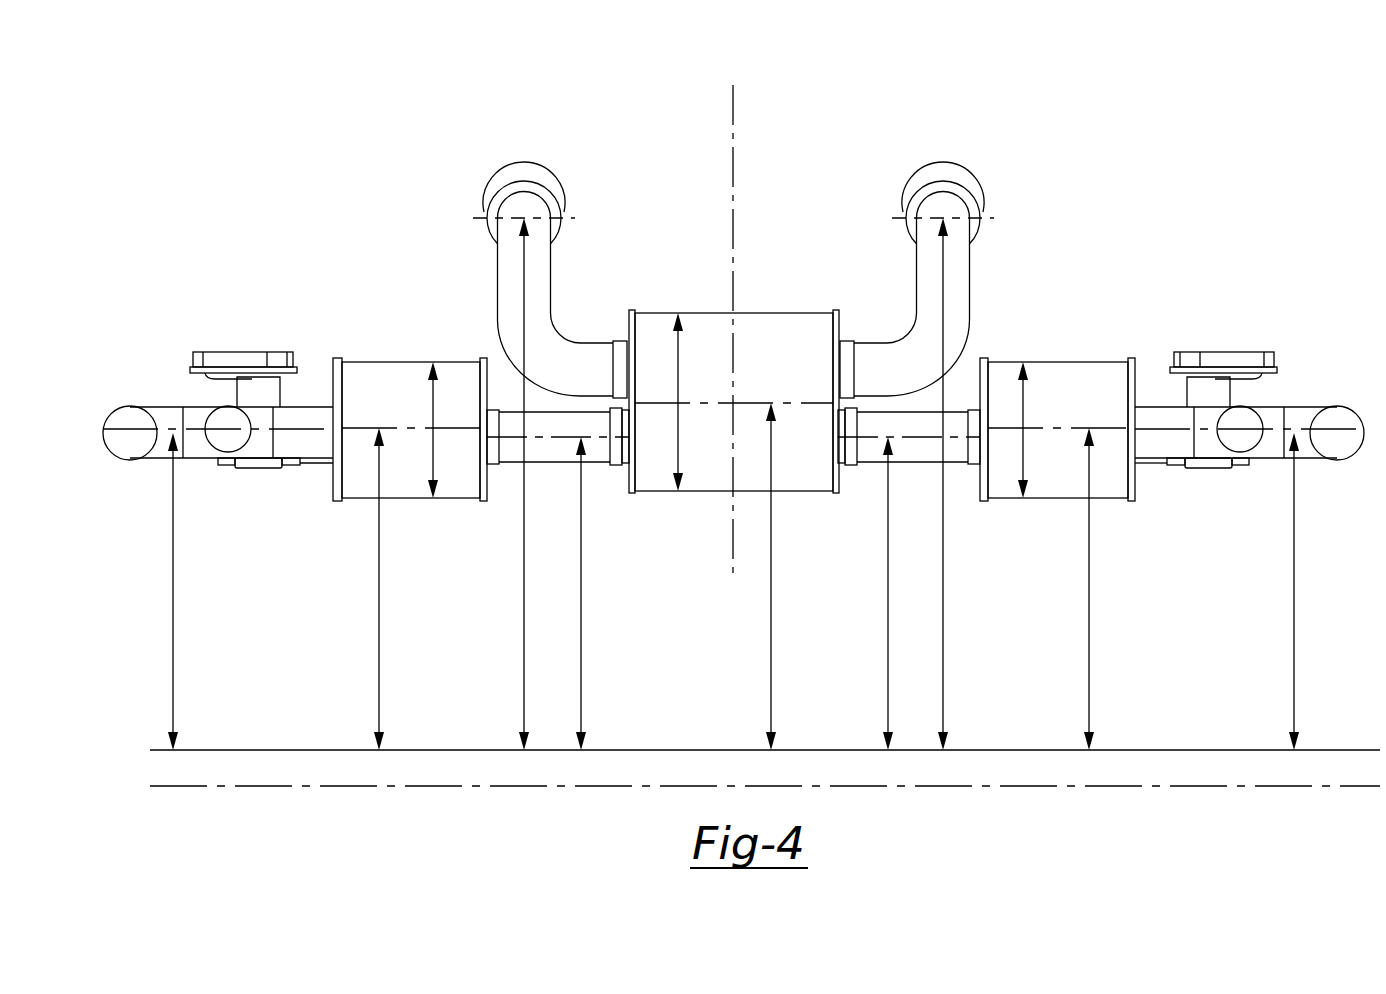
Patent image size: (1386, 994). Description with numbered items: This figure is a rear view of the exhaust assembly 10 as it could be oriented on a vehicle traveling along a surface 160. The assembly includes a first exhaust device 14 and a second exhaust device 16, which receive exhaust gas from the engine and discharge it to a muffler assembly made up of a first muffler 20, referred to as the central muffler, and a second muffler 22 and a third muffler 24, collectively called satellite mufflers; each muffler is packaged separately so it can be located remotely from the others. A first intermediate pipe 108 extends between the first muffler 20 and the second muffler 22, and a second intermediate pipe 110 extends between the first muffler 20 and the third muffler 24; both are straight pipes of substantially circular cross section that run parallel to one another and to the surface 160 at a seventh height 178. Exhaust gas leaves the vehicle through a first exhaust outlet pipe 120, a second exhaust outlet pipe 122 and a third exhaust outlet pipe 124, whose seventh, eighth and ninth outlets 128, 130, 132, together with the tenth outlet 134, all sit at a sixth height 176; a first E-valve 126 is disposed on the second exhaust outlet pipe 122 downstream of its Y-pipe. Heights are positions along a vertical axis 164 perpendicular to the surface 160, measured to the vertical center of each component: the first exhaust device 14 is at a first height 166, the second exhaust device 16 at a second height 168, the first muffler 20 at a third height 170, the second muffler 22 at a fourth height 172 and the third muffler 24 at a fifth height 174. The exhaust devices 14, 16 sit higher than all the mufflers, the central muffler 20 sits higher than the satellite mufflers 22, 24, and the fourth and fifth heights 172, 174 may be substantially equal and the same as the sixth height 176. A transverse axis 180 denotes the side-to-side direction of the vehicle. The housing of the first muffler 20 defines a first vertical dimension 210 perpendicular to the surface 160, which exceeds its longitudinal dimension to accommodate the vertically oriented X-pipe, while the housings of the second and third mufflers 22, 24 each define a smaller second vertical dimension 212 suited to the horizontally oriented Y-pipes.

The exhaust assembly 10 is at (1176, 134).
The first exhaust device 14 is at (947, 178).
The second exhaust device 16 is at (524, 178).
The first muffler 20 is at (763, 312).
The second muffler 22 is at (1057, 361).
The third muffler 24 is at (433, 361).
The first intermediate pipe 108 is at (916, 462).
The second intermediate pipe 110 is at (551, 462).
The first exhaust outlet pipe 120 is at (1208, 412).
The second exhaust outlet pipe 122 is at (1304, 407).
The third exhaust outlet pipe 124 is at (259, 412).
The first E-valve 126 is at (150, 407).
The seventh outlet 128 is at (1243, 438).
The eighth outlet 130 is at (1333, 438).
The ninth outlet 132 is at (224, 438).
The tenth outlet 134 is at (134, 438).
The surface 160 is at (1323, 750).
The vertical axis 164 is at (733, 118).
The first height 166 is at (943, 626).
The second height 168 is at (524, 567).
The third height 170 is at (771, 600).
The fourth height 172 is at (1088, 570).
The fifth height 174 is at (379, 644).
The sixth height 176 is at (173, 617).
The seventh height 178 is at (581, 645).
The transverse axis 180 is at (1322, 788).
The first vertical dimension 210 is at (698, 312).
The second vertical dimension 212 is at (435, 398).